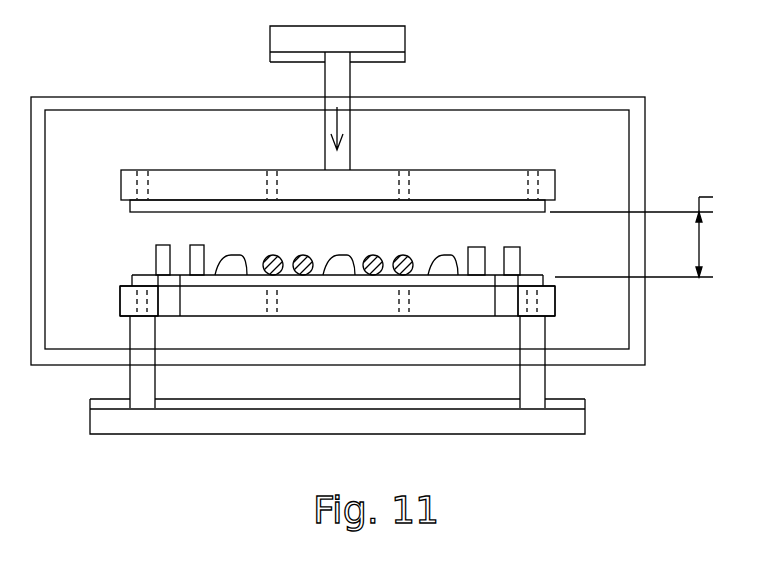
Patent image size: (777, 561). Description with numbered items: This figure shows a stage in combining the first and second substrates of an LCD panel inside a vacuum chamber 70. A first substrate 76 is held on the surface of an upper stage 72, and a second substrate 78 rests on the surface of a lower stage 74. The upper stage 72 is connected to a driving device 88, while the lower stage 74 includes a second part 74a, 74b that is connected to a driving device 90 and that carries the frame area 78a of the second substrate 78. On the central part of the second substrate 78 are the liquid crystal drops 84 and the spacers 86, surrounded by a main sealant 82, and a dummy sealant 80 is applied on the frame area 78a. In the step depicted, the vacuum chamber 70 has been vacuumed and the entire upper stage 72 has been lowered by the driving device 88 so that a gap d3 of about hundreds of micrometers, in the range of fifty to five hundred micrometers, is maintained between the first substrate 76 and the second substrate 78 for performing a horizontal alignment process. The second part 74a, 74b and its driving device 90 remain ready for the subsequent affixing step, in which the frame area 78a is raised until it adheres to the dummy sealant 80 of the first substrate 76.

The vacuum chamber 70 is at (640, 144).
The upper stage 72 is at (555, 188).
The lower stage 74 is at (353, 300).
The second part of lower stage 74a is at (555, 302).
The second part of lower stage 74b is at (120, 300).
The first substrate 76 is at (130, 208).
The second substrate 78 is at (357, 273).
The frame area 78a is at (130, 278).
The dummy sealant 80 is at (163, 270).
The main sealant 82 is at (200, 270).
The liquid crystal drops 84 is at (240, 258).
The spacers 86 is at (277, 270).
The driving device 88 is at (405, 40).
The driving device 90 is at (585, 425).
The gap d3 is at (647, 234).